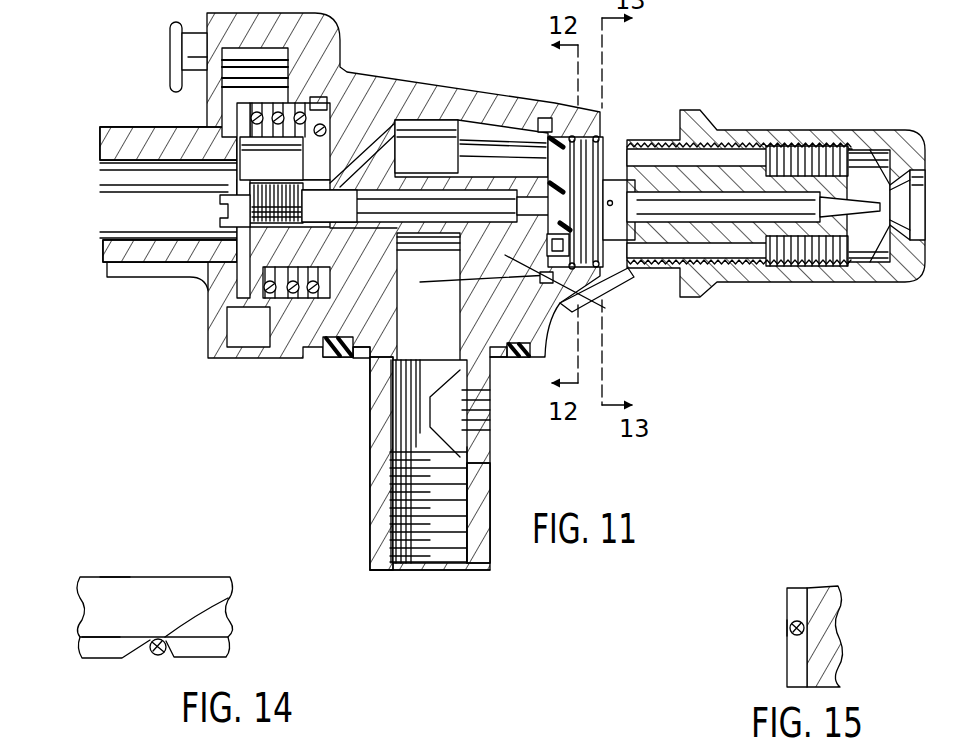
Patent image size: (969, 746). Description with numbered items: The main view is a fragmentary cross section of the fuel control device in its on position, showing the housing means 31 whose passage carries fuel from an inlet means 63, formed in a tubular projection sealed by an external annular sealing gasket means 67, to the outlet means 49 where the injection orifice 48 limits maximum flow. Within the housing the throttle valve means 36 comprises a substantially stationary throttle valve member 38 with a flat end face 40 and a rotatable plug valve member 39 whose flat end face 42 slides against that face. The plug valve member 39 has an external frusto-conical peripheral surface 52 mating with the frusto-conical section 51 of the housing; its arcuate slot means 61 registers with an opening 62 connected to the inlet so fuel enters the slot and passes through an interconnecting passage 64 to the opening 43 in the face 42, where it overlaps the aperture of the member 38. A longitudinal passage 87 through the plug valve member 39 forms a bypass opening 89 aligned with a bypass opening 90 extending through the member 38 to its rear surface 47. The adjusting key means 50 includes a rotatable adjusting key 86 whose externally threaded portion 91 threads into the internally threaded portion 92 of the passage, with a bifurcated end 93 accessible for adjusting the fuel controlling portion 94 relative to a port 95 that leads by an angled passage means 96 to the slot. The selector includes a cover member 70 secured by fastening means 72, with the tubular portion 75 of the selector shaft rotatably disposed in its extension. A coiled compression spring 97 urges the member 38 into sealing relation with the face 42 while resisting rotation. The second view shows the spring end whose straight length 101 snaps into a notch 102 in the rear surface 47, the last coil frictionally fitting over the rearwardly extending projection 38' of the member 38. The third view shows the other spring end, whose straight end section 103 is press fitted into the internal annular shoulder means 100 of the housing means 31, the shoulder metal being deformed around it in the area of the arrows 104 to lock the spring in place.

In FIG. 11, the fastening means 72 is at (170, 45).
In FIG. 11, the tubular portion 75 is at (148, 150).
In FIG. 11, the frusto-conical section 51 is at (333, 115).
In FIG. 11, the plug valve member 39 is at (393, 125).
In FIG. 11, the angled passage means 96 is at (388, 120).
In FIG. 11, the slot means 61 is at (428, 150).
In FIG. 11, the interconnecting passage 64 is at (490, 137).
In FIG. 11, the opening 43 is at (545, 119).
In FIG. 11, the throttle valve means 36 is at (594, 127).
In FIG. 11, the compression spring 97 is at (608, 178).
In FIG. 11, the outlet means 49 is at (640, 165).
In FIG. 11, the injection orifice 48 is at (790, 122).
In FIG. 11, the externally threaded portion 91 is at (272, 176).
In FIG. 11, the port 95 is at (337, 190).
In FIG. 11, the internally threaded portion 92 is at (240, 192).
In FIG. 11, the bifurcated end 93 is at (236, 212).
In FIG. 11, the fuel controlling portion 94 is at (352, 207).
In FIG. 11, the bypass opening 89 is at (526, 212).
In FIG. 11, the bypass opening 90 is at (560, 205).
In FIG. 11, the end face 42 is at (547, 246).
In FIG. 11, the adjusting key 86 is at (334, 228).
In FIG. 11, the passage 87 is at (437, 208).
In FIG. 11, the adjusting key means 50 is at (283, 232).
In FIG. 11, the cover member 70 is at (207, 323).
In FIG. 11, the external frusto-conical peripheral surface 52 is at (338, 358).
In FIG. 11, the opening 62 is at (457, 298).
In FIG. 11, the throttle valve member 38 is at (576, 294).
In FIG. 14, the throttle valve member 38 is at (155, 586).
In FIG. 11, the housing means 31 is at (383, 397).
In FIG. 15, the housing means 31 is at (838, 600).
In FIG. 11, the inlet means 63 is at (395, 440).
In FIG. 11, the external annular sealing gasket means 67 is at (392, 512).
In FIG. 14, the end face 40 is at (115, 577).
In FIG. 14, the straight length 101 is at (228, 598).
In FIG. 14, the rearwardly extending projection 38' is at (74, 665).
In FIG. 14, the rear surface 47 is at (222, 662).
In FIG. 14, the notch 102 is at (158, 661).
In FIG. 15, the internal annular shoulder means 100 is at (787, 597).
In FIG. 15, the arrows 104 is at (784, 625).
In FIG. 15, the straight end section 103 is at (805, 628).